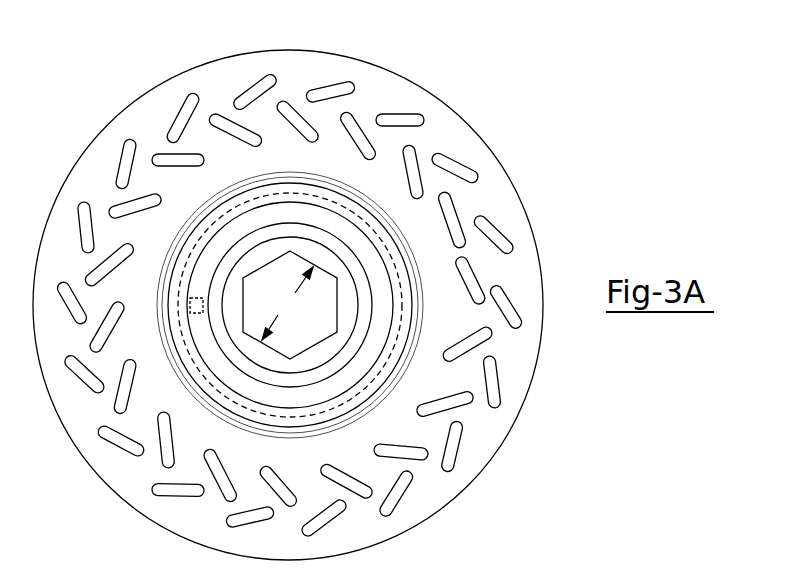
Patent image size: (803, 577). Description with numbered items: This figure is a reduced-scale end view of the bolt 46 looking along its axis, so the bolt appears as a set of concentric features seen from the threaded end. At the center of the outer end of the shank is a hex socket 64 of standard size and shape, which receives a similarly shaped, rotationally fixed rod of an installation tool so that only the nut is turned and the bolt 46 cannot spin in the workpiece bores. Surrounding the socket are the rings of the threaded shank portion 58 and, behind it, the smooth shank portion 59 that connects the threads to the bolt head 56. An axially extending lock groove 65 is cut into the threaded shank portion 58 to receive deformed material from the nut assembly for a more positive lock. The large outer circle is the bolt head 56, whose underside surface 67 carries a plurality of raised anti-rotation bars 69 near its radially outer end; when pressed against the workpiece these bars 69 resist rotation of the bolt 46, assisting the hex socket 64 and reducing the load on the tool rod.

The bolt 46 is at (307, 290).
The bolt head 56 is at (522, 366).
The threaded shank portion 58 is at (260, 237).
The smooth shank portion 59 is at (310, 188).
The hex socket 64 is at (335, 303).
The lock groove 65 is at (196, 314).
The underside surface 67 is at (457, 137).
The raised anti-rotation bars 69 is at (83, 213).